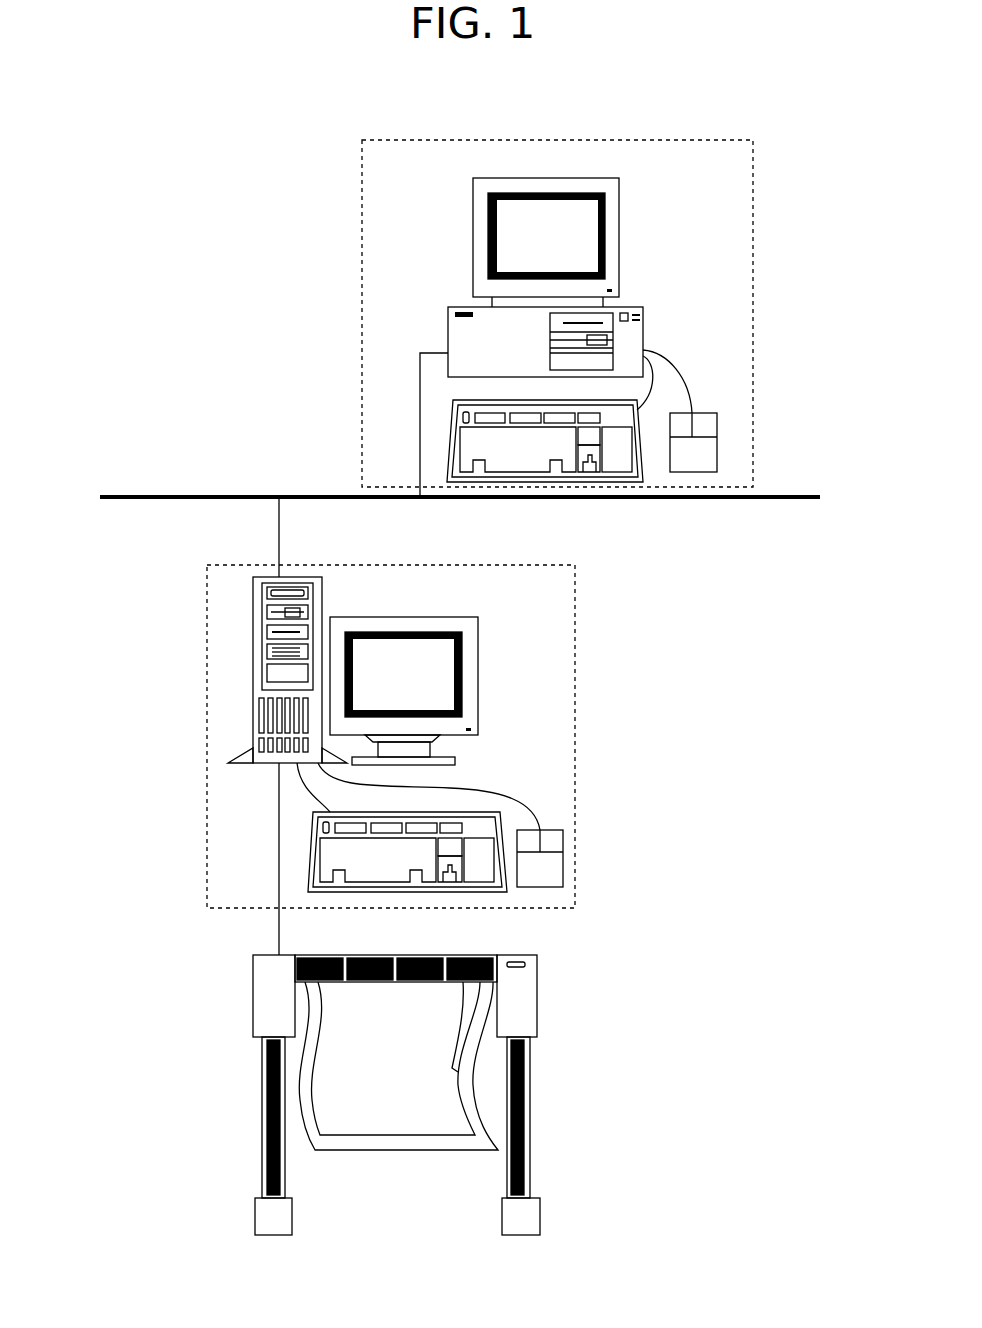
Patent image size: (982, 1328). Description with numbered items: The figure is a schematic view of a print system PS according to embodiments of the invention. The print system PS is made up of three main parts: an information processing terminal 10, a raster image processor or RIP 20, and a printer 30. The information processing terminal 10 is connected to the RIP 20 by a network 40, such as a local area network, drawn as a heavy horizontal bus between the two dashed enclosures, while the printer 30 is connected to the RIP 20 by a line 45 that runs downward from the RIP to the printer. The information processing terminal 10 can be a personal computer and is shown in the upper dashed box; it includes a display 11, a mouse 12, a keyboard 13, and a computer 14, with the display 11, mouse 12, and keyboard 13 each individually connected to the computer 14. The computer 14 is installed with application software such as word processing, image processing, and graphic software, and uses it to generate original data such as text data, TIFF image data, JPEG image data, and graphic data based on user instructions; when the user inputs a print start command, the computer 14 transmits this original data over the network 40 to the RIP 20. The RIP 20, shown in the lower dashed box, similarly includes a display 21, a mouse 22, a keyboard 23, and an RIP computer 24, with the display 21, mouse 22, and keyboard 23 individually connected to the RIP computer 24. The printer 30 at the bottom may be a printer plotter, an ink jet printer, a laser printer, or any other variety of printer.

The print system PS is at (827, 119).
The information processing terminal 10 is at (663, 140).
The display 11 is at (615, 232).
The mouse 12 is at (717, 445).
The keyboard 13 is at (453, 438).
The computer 14 is at (457, 336).
The raster image processor (RIP) 20 is at (445, 565).
The display 21 is at (470, 672).
The mouse 22 is at (563, 862).
The keyboard 23 is at (477, 890).
The RIP computer 24 is at (253, 663).
The printer 30 is at (537, 1030).
The network 40 is at (696, 501).
The line 45 is at (279, 932).